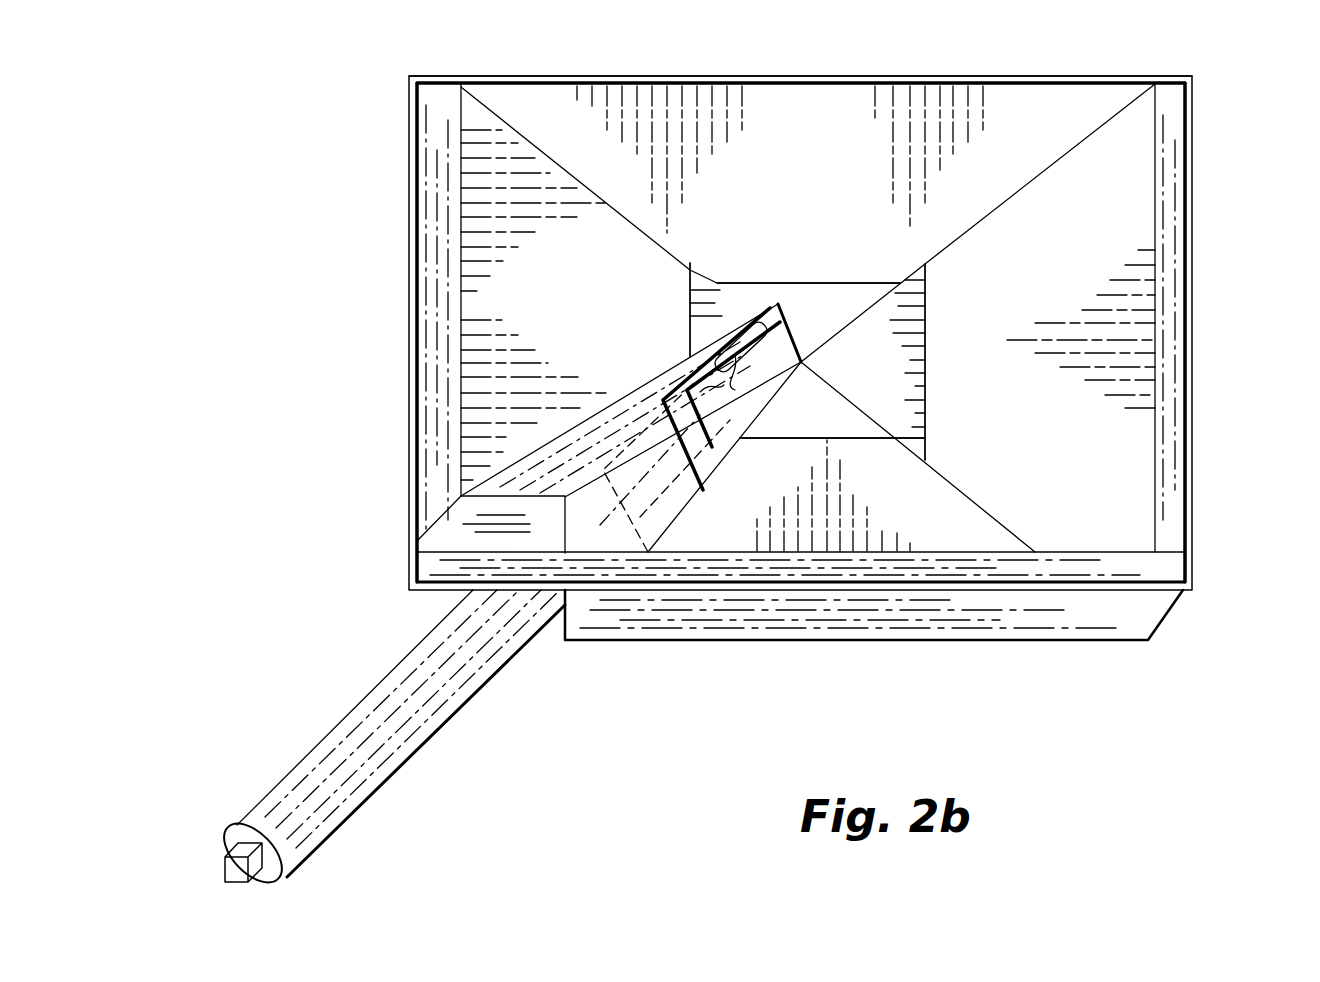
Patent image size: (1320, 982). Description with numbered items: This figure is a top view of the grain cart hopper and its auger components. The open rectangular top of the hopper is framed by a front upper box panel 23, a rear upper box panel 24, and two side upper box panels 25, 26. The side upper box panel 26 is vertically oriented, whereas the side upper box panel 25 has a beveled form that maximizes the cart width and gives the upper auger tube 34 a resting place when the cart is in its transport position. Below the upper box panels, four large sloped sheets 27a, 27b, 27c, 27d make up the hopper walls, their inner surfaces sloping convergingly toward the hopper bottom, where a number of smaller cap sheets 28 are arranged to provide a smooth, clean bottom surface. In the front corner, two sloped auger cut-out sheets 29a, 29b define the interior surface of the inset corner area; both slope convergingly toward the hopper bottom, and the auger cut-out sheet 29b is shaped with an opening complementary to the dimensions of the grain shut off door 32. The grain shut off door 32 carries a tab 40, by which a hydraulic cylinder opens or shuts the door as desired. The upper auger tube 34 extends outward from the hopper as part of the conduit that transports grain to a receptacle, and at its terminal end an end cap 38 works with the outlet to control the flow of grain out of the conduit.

The front upper box panel 23 is at (408, 277).
The rear upper box panel 24 is at (1197, 322).
The side upper box panel 25 is at (940, 598).
The side upper box panel 26 is at (678, 77).
The sloped sheet 27a is at (610, 318).
The sloped sheet 27b is at (1023, 286).
The sloped sheet 27c is at (905, 486).
The sloped sheet 27d is at (808, 216).
The cap sheet 28 is at (890, 366).
The auger cut-out sheet 29a is at (548, 467).
The auger cut-out sheet 29b is at (603, 517).
The grain shut off door 32 is at (703, 447).
The upper auger tube 34 is at (390, 762).
The end cap 38 is at (225, 862).
The tab 40 is at (653, 550).